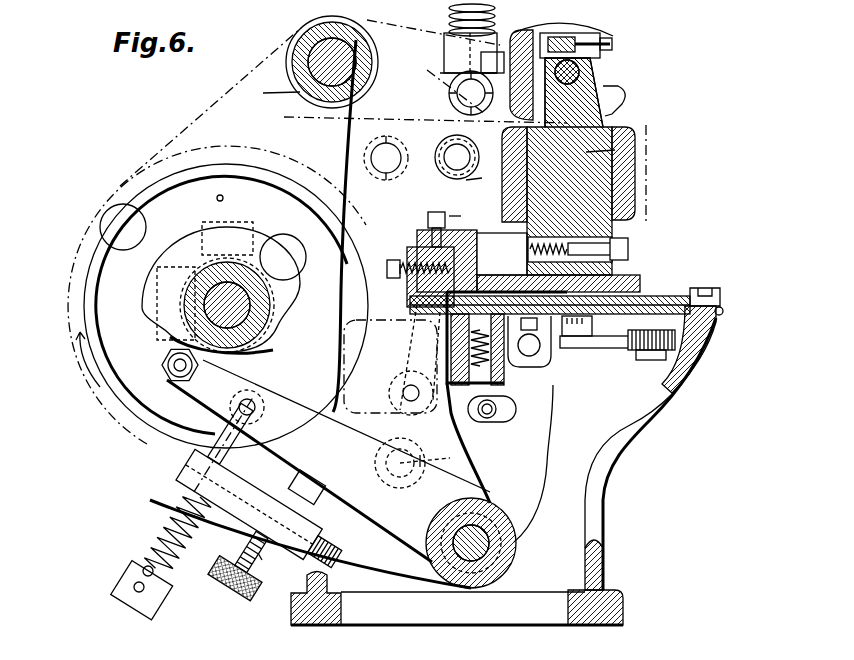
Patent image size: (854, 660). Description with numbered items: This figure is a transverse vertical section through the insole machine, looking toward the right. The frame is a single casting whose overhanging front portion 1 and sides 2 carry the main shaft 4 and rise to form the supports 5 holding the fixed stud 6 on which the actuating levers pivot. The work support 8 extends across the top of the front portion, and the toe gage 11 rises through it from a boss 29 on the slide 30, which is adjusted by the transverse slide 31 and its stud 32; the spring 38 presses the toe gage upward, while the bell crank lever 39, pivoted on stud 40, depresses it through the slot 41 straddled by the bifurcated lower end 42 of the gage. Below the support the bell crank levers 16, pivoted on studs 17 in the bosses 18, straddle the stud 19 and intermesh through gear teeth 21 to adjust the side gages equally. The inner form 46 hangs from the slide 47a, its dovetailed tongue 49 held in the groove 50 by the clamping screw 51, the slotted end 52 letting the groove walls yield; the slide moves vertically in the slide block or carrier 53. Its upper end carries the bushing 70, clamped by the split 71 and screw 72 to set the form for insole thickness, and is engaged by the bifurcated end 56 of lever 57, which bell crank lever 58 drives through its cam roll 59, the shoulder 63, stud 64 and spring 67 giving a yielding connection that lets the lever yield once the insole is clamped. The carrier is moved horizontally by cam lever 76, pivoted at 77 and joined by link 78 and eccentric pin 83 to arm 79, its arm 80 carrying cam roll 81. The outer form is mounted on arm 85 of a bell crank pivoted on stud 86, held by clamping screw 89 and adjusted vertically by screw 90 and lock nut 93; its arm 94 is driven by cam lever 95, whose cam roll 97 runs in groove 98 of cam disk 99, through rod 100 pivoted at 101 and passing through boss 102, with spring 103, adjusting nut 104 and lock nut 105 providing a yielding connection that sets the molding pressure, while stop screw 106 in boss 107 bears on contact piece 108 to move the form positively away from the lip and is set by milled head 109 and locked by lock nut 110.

The overhanging front portion 1 is at (697, 367).
The sides 2 is at (547, 463).
The main shaft 4 is at (227, 290).
The supports 5 is at (263, 93).
The stud 6 is at (286, 56).
The work support 8 is at (723, 310).
The toe gage 11 is at (424, 335).
The bell crank levers 16 is at (628, 342).
The studs 17 is at (655, 361).
The bosses 18 is at (676, 296).
The stud 19 is at (592, 336).
The gear teeth 21 is at (709, 338).
The boss 29 is at (501, 370).
The slide 30 is at (712, 296).
The transverse slide 31 is at (553, 338).
The stud 32 is at (533, 362).
The spring 38 is at (430, 356).
The bell crank lever 39 is at (415, 447).
The stud 40 is at (403, 392).
The slot 41 is at (514, 425).
The bifurcated lower end 42 is at (508, 405).
The bracket arm 46 is at (648, 282).
The slide 47a is at (615, 150).
The dovetailed tongue 49 is at (620, 265).
The groove 50 is at (648, 224).
The clamping screw 51 is at (628, 237).
The slot 52 is at (486, 266).
The slide block 53 is at (621, 178).
The slotted bifurcated end 56 is at (607, 85).
The lever 57 is at (196, 136).
The bell crank lever 58 is at (409, 73).
The cam roll 59 is at (108, 214).
The shoulder 63 is at (445, 69).
The stud 64 is at (449, 92).
The spring 67 is at (449, 11).
The bushing 70 is at (597, 68).
The split 71 is at (577, 33).
The clamping screw 72 is at (612, 46).
The cam lever 76 is at (343, 162).
The pivot 77 is at (452, 458).
The link 78 is at (416, 152).
The rearwardly projecting arm 79 is at (474, 180).
The rearwardly projecting arm 80 is at (305, 266).
The cam roll 81 is at (282, 237).
The pin 83 is at (463, 152).
The arm 85 is at (418, 250).
The stud 86 is at (483, 527).
The clamping screw 89 is at (272, 300).
The adjusting screw 90 is at (452, 216).
The lock nut 93 is at (446, 232).
The rearwardly extending arm 94 is at (398, 574).
The cam lever 95 is at (360, 502).
The cam roll 97 is at (172, 382).
The cam groove 98 is at (220, 196).
The cam disk 99 is at (96, 295).
The rod 100 is at (210, 455).
The pivot 101 is at (239, 410).
The boss 102 is at (185, 473).
The spring 103 is at (160, 532).
The adjusting nut 104 is at (135, 562).
The lock nut 105 is at (128, 577).
The stop screw 106 is at (246, 553).
The boss 107 is at (307, 553).
The contact piece 108 is at (312, 488).
The milled head 109 is at (222, 596).
The lock nut 110 is at (258, 553).